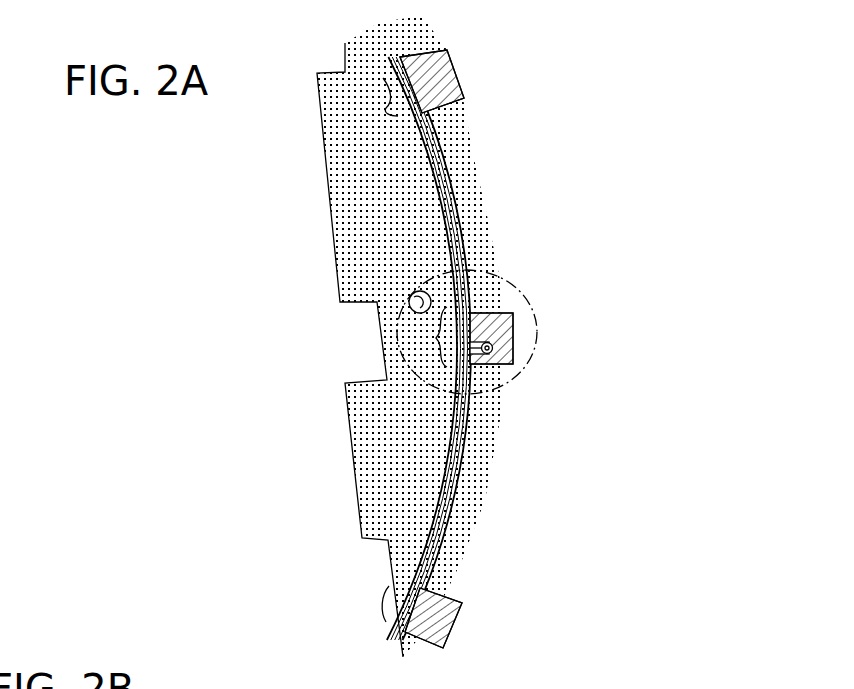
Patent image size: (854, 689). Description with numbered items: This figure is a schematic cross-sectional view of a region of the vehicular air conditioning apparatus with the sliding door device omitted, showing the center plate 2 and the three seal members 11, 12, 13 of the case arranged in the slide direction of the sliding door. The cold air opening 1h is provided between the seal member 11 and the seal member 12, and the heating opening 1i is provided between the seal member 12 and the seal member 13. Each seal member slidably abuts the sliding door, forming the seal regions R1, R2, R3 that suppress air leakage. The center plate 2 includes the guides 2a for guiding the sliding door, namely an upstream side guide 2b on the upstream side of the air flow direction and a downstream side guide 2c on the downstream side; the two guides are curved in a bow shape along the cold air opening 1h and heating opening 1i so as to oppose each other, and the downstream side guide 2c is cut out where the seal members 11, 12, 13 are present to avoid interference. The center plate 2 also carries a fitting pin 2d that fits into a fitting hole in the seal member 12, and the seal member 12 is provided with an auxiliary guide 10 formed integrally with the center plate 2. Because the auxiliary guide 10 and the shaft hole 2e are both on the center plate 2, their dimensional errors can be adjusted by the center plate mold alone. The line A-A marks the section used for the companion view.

The center plate 2 is at (332, 212).
The guides 2a is at (431, 348).
The upstream side guide 2b is at (447, 227).
The downstream side guide 2c is at (456, 208).
The fitting pin 2d is at (495, 347).
The shaft hole 2e is at (409, 305).
The cold air opening 1h is at (459, 194).
The heating opening 1i is at (455, 508).
The auxiliary guide 10 is at (492, 306).
The seal member 11 is at (448, 80).
The seal member 12 is at (513, 320).
The seal member 13 is at (445, 613).
The seal region R1 is at (385, 110).
The seal region R2 is at (436, 340).
The seal region R3 is at (385, 597).
The line A- A is at (393, 57).